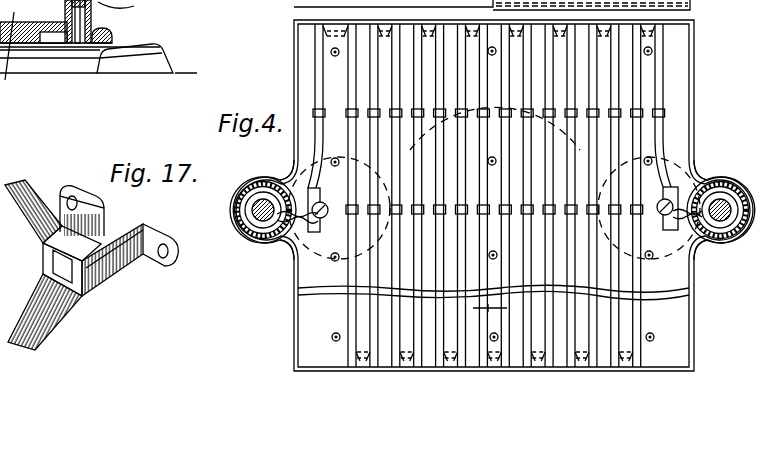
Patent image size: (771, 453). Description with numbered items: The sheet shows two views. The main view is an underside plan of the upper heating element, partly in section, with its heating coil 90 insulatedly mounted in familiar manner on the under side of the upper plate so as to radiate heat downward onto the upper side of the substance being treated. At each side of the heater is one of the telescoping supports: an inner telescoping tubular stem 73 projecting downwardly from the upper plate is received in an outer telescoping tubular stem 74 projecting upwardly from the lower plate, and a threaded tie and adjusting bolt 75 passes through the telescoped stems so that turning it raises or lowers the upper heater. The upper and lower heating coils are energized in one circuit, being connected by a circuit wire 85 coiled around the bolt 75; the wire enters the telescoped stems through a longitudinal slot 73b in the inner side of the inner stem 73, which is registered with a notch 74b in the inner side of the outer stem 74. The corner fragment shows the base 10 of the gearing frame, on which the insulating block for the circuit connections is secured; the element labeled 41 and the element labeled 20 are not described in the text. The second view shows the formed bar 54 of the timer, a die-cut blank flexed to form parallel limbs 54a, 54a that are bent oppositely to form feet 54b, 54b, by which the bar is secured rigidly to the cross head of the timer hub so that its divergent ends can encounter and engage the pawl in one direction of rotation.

In FIG. 4, the panel 20 is at (337, 71).
In FIG. 4, the heating coil 90 is at (661, 60).
In FIG. 4, the outer telescoping tubular stem 74 is at (259, 186).
In FIG. 4, the notch 74b is at (296, 186).
In FIG. 4, the circuit wire 85 is at (256, 234).
In FIG. 4, the tie and adjusting bolt 75 is at (236, 204).
In FIG. 4, the inner telescoping tubular stem 73 is at (272, 240).
In FIG. 4, the longitudinal slot 73b is at (287, 226).
In FIG. 17, the bar 54 is at (109, 248).
In FIG. 17, the limb 54a is at (67, 222).
In FIG. 17, the foot 54b is at (80, 187).
In FIG. 17, the base 10 is at (110, 50).
In FIG. 17, the post 41 is at (11, 56).